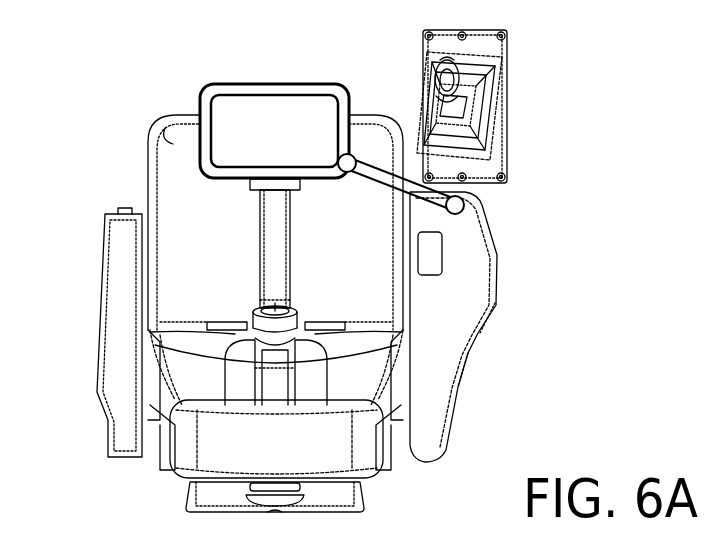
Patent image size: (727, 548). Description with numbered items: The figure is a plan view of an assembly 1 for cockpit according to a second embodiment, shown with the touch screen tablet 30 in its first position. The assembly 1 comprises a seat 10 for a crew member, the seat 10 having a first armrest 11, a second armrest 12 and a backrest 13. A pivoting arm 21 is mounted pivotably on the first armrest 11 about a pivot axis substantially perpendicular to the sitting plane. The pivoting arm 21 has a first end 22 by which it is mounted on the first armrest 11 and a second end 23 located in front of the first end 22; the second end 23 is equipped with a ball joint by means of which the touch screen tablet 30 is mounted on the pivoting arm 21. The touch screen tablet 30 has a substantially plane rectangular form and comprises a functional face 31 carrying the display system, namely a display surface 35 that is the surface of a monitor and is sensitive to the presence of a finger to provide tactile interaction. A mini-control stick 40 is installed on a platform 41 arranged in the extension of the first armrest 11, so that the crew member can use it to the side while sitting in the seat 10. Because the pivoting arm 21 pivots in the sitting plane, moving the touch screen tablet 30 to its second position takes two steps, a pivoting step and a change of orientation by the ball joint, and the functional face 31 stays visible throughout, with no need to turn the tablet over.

The assembly for cockpit 1 is at (95, 78).
The seat 10 is at (172, 140).
The first armrest 11 is at (441, 380).
The second armrest 12 is at (112, 345).
The backrest 13 is at (340, 462).
The pivoting arm 21 is at (444, 134).
The first end 22 is at (466, 204).
The second end 23 is at (350, 156).
The touch screen tablet 30 is at (264, 174).
The functional face 31 is at (231, 107).
The display surface 35 is at (215, 103).
The mini-control stick 40 is at (467, 90).
The platform 41 is at (500, 95).